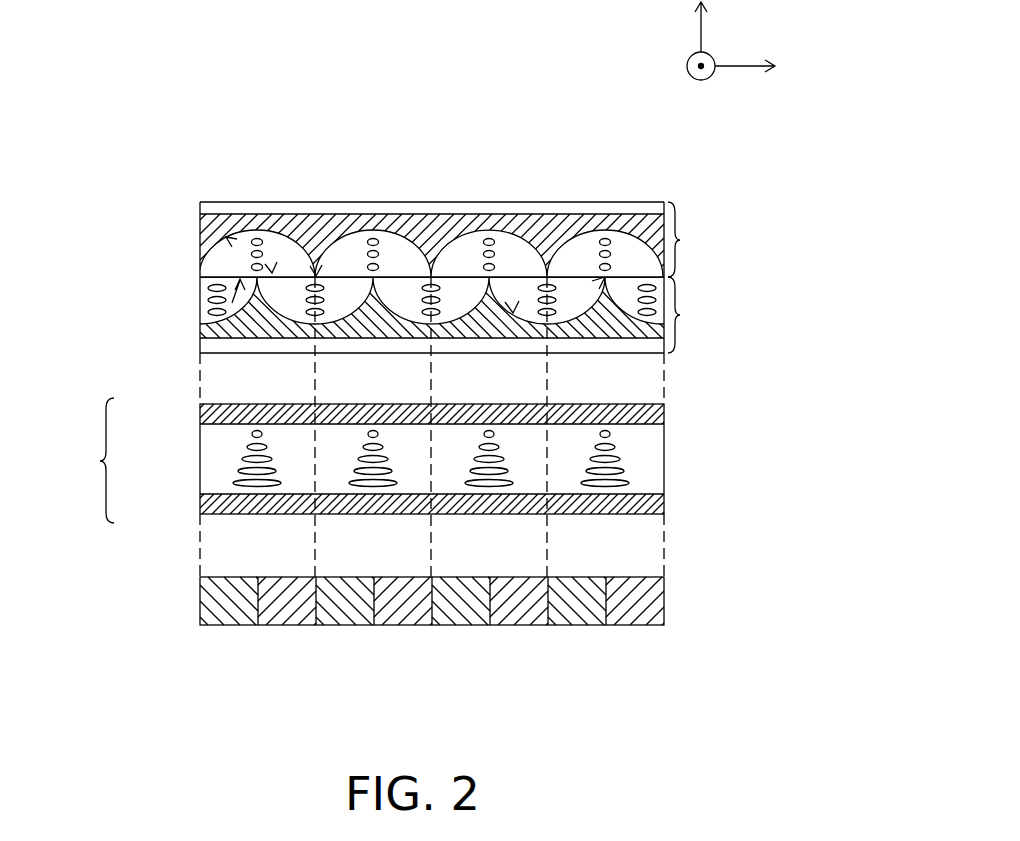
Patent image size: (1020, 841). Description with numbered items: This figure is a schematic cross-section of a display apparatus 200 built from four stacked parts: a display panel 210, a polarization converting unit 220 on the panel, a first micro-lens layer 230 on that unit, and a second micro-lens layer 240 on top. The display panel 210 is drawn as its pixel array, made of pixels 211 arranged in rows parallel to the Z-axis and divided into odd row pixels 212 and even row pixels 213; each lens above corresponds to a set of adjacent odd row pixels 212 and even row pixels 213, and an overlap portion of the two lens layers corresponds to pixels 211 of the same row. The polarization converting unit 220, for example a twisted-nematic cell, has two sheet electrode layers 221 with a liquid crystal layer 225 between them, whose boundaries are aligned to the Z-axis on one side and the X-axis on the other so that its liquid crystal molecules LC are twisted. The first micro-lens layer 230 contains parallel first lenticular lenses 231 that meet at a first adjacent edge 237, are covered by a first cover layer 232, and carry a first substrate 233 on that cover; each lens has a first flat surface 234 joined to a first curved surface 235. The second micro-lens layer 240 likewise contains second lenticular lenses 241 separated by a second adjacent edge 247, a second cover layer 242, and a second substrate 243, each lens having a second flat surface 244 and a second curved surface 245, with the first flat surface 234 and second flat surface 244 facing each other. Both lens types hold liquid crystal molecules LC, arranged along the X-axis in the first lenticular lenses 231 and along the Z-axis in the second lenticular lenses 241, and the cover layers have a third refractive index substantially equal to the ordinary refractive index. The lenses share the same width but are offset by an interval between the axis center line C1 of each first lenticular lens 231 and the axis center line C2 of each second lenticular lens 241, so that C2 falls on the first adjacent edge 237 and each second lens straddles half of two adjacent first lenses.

The display apparatus 200 is at (430, 358).
The display panel 210 is at (465, 630).
The pixels 211 is at (505, 630).
The odd row pixels 212 is at (665, 600).
The even row pixels 213 is at (583, 626).
The polarization converting unit 220 is at (357, 457).
The electrode layers 221 is at (210, 412).
The liquid crystal layer 225 is at (210, 457).
The first micro-lens layer 230 is at (427, 266).
The first lenticular lenses 231 is at (623, 287).
The first cover layer 232 is at (638, 333).
The first substrate 233 is at (200, 344).
The first flat surface 234 is at (210, 333).
The first curved surface 235 is at (512, 311).
The first adjacent edge 237 is at (602, 279).
The second micro-lens layer 240 is at (427, 258).
The second lenticular lenses 241 is at (470, 247).
The second cover layer 242 is at (218, 236).
The second substrate 243 is at (557, 206).
The second flat surface 244 is at (272, 272).
The second curved surface 245 is at (228, 238).
The second adjacent edge 247 is at (316, 274).
The liquid crystal molecules LC is at (373, 247).
The axis center line of first lenticular lens C1 is at (432, 277).
The axis center line of second lenticular lens C2 is at (432, 276).